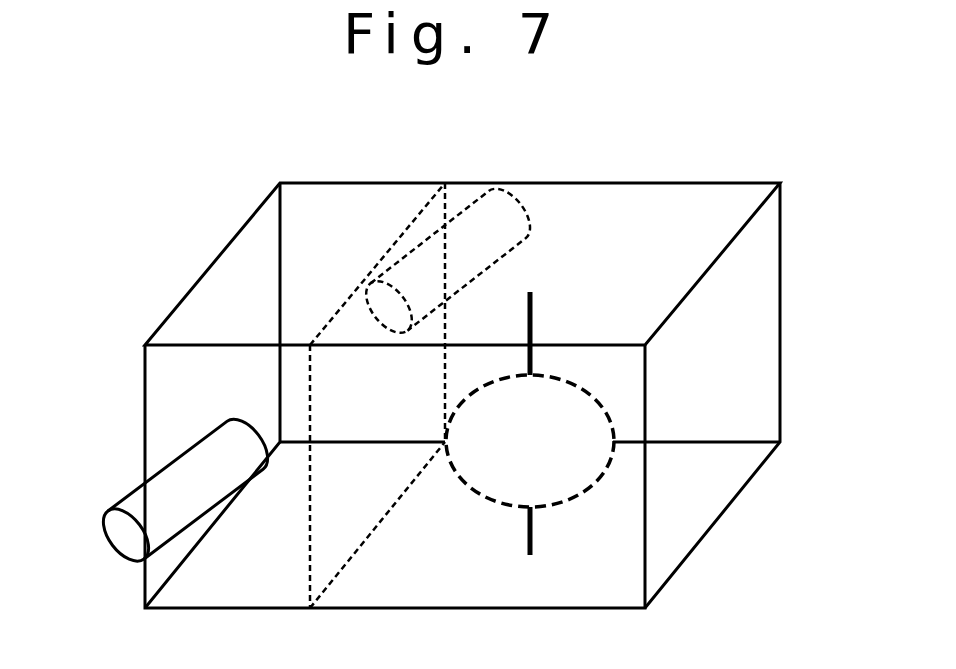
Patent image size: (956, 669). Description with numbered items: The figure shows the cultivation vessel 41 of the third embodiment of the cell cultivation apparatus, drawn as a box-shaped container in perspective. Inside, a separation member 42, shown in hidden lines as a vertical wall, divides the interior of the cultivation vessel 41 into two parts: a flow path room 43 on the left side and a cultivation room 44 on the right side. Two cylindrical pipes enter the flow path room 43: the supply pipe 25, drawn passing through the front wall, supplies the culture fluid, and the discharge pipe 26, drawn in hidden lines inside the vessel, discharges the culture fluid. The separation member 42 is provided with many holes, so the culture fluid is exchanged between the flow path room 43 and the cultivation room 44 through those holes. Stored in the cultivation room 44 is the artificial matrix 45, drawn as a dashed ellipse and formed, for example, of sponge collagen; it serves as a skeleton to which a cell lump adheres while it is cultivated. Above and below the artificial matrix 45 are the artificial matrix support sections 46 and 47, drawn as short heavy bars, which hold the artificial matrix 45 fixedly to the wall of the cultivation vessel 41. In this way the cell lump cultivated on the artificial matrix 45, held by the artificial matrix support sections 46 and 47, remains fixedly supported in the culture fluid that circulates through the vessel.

The supply pipe 25 is at (165, 498).
The discharge pipe 26 is at (504, 194).
The cultivation vessel 41 is at (655, 215).
The separation member 42 is at (352, 515).
The flow path room 43 is at (225, 292).
The cultivation room 44 is at (753, 315).
The artificial matrix 45 is at (575, 500).
The artificial matrix support section 46 is at (533, 305).
The artificial matrix support section 47 is at (528, 533).